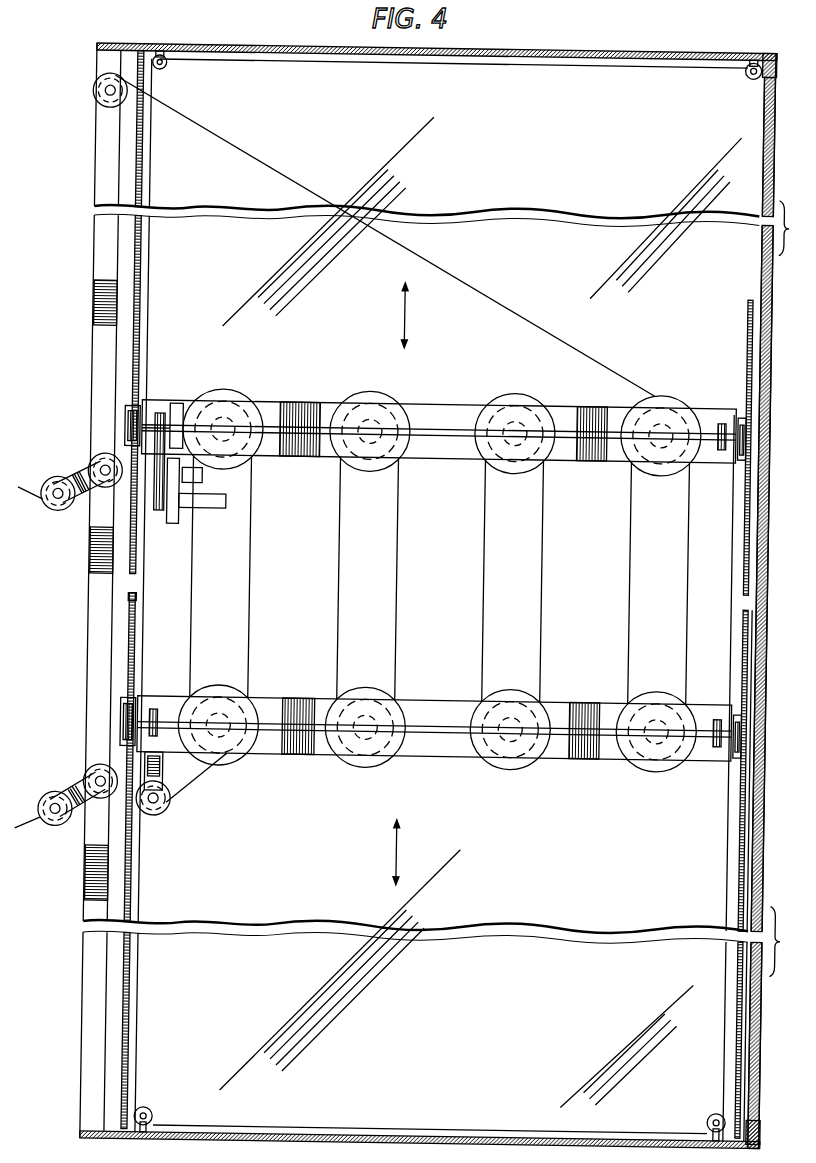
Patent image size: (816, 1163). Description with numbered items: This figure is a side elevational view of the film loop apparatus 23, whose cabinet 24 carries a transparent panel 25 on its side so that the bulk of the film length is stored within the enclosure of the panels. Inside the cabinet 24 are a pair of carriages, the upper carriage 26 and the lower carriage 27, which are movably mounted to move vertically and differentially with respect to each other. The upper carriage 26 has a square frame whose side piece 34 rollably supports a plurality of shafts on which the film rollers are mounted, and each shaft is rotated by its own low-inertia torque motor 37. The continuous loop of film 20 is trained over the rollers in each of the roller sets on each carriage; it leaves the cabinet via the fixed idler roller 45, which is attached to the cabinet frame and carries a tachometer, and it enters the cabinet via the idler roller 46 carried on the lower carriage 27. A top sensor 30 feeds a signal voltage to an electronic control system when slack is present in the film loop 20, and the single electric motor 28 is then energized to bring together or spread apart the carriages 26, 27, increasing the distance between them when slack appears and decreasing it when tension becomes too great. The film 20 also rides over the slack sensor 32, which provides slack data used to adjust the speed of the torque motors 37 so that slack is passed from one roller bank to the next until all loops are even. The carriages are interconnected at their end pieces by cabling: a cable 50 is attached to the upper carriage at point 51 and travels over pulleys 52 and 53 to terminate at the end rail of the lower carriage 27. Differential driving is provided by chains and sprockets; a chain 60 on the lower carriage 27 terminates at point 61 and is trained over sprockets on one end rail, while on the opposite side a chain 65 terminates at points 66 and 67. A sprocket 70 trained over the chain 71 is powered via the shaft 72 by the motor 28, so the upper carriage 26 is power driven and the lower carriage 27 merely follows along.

The film loop 20 is at (286, 165).
The film loop apparatus 23 is at (735, 48).
The cabinet 24 is at (575, 46).
The transparent panel 25 is at (770, 160).
The upper carriage 26 is at (444, 430).
The lower carriage 27 is at (461, 696).
The electric motor 28 is at (232, 508).
The top sensor 30 is at (62, 479).
The slack sensor 32 is at (62, 791).
The side piece 34 is at (455, 452).
The torque motor 37 is at (343, 384).
The idler roller 45 is at (93, 93).
The idler roller 46 is at (177, 808).
The cable 50 is at (365, 60).
The attachment point 51 is at (155, 391).
The pulley 52 is at (172, 72).
The pulley 53 is at (749, 72).
The chain 60 is at (138, 680).
The chain termination point 61 is at (137, 594).
The chain 65 is at (758, 843).
The chain termination point 66 is at (762, 1112).
The chain termination point 67 is at (761, 594).
The sprocket 70 is at (134, 424).
The chain 71 is at (136, 552).
The shaft 72 is at (312, 454).